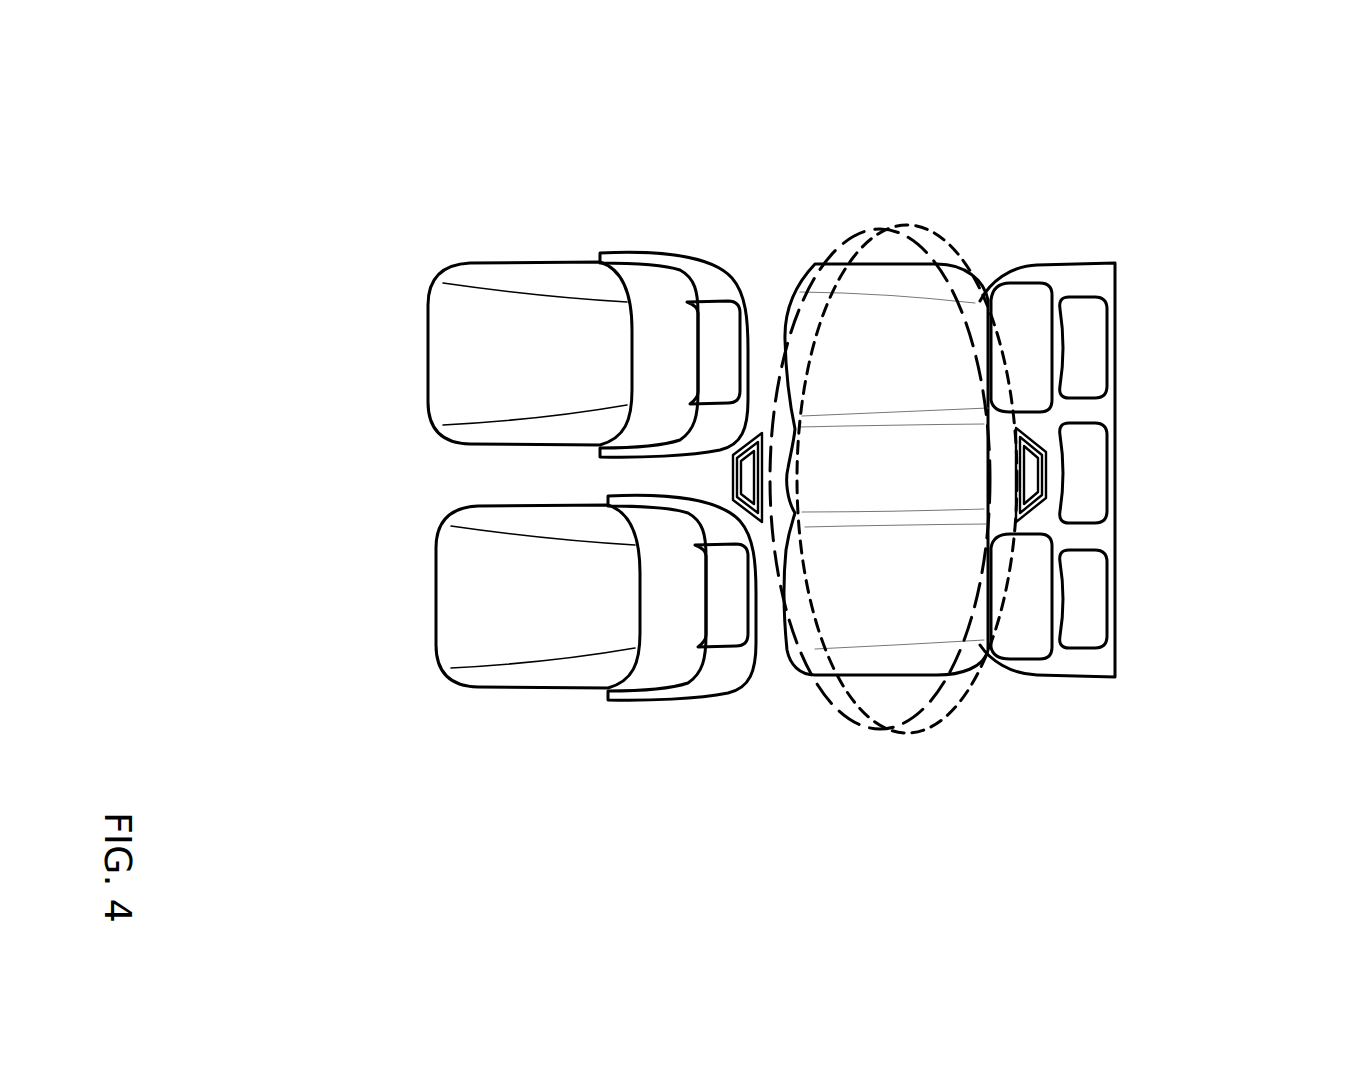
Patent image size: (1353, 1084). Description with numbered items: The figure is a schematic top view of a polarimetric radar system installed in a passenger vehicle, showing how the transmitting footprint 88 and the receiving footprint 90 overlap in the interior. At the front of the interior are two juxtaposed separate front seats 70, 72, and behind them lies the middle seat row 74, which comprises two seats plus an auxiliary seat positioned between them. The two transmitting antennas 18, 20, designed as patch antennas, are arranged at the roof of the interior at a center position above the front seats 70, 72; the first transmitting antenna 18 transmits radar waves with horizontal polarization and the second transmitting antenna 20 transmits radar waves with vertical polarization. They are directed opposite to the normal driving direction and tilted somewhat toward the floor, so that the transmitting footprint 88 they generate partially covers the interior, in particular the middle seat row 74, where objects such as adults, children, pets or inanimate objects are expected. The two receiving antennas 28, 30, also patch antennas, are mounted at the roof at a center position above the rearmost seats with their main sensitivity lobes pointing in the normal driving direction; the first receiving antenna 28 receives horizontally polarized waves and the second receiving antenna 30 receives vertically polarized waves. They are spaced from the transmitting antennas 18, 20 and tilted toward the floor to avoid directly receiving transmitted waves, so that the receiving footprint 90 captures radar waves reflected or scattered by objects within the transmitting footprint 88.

The first transmitting antenna 18 is at (704, 318).
The second transmitting antenna 20 is at (755, 432).
The first receiving antenna 28 is at (1160, 402).
The second receiving antenna 30 is at (1034, 432).
The front seat 70 is at (470, 262).
The front seat 72 is at (468, 688).
The middle seat row 74 is at (990, 758).
The transmitting footprint 88 is at (852, 235).
The receiving footprint 90 is at (940, 237).